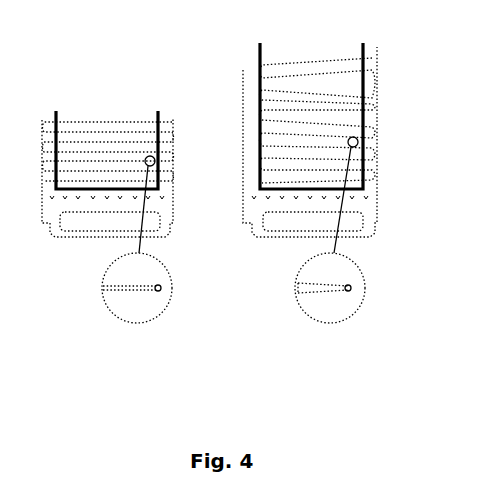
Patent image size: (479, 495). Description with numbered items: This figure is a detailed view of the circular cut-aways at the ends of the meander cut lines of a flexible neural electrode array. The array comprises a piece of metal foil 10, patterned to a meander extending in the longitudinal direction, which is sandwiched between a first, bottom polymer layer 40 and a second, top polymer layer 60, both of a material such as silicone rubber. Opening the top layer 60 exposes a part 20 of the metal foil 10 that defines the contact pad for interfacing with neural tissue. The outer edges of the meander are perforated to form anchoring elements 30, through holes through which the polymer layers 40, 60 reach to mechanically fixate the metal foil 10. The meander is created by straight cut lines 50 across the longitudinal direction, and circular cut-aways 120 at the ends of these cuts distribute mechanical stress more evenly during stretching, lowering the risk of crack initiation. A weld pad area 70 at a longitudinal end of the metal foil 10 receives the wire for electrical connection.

The metal foil 10 is at (252, 190).
The part of the metal foil 20 is at (277, 88).
The anchoring elements 30 is at (252, 120).
The first (bottom) layer 40 is at (347, 122).
The straight cut lines 50 is at (310, 283).
The second (top) layer 60 is at (368, 77).
The weld pad area 70 is at (270, 220).
The circular cut-aways 120 is at (350, 290).